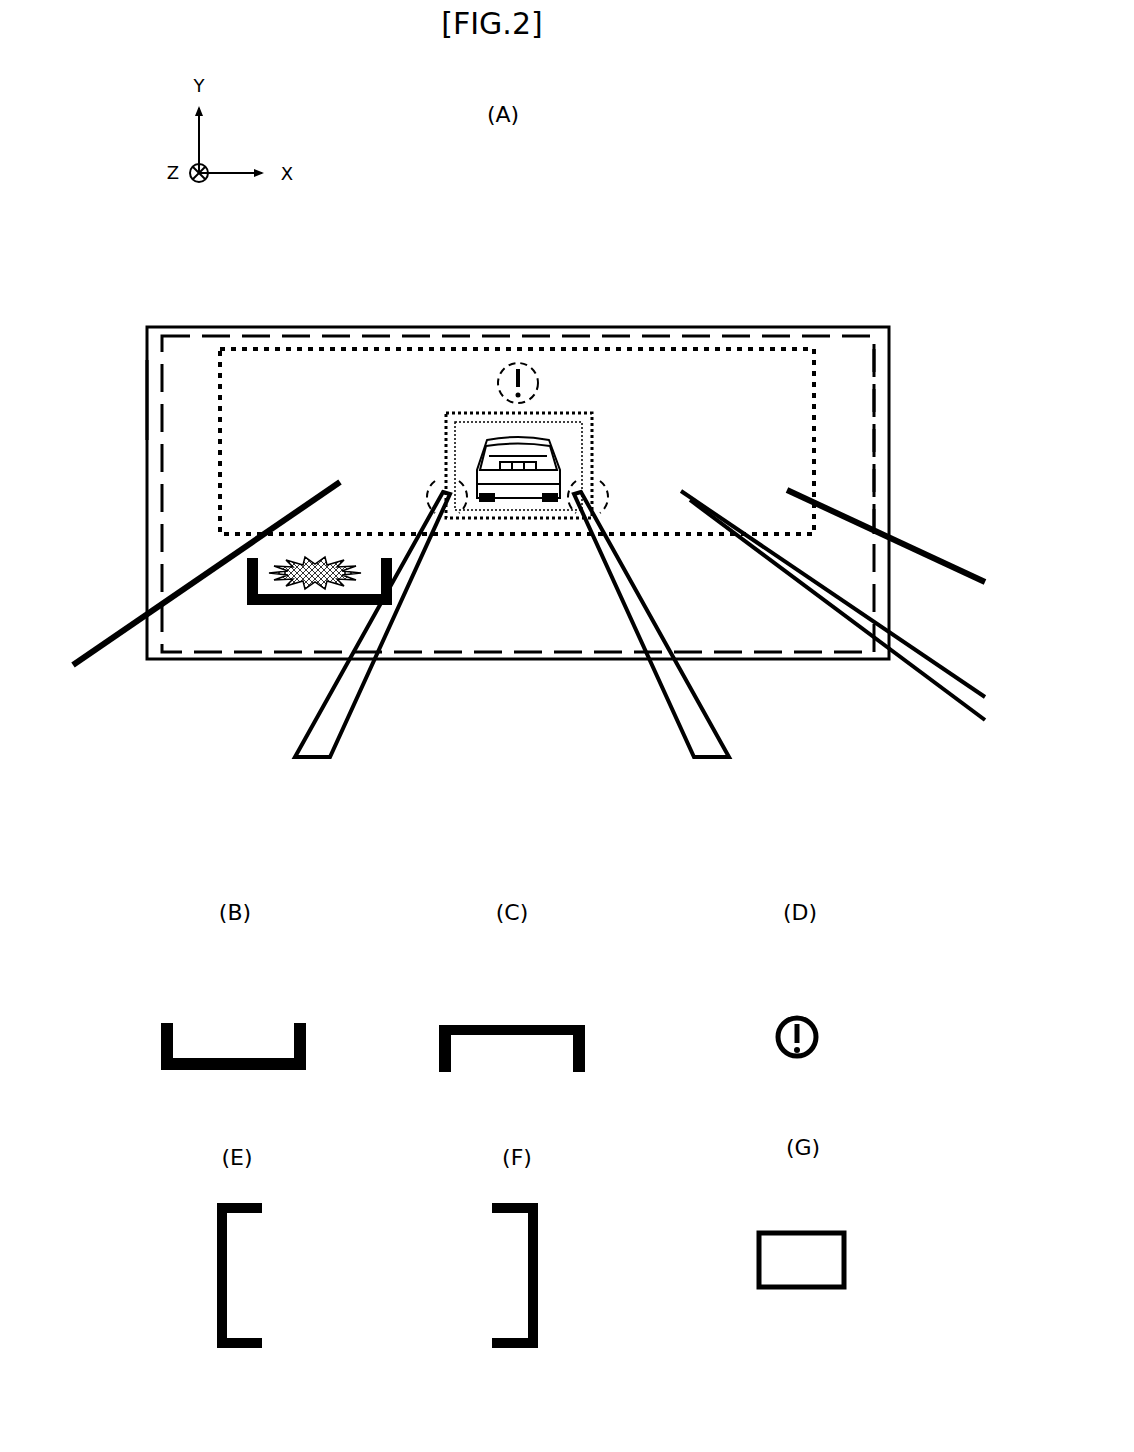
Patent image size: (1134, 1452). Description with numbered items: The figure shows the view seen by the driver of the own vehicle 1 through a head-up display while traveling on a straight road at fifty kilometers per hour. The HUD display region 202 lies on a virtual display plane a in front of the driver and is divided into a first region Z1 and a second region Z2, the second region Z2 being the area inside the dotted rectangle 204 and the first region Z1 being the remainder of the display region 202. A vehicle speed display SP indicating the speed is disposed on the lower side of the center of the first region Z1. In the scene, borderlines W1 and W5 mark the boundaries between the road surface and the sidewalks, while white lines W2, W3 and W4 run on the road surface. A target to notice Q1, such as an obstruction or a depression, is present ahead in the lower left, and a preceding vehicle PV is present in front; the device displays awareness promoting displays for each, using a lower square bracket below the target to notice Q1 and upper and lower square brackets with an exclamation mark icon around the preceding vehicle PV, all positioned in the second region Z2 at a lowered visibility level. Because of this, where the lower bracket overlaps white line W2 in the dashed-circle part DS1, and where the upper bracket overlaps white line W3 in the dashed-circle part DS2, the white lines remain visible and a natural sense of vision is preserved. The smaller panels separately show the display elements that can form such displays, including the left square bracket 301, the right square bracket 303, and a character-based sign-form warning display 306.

The vehicle 1 is at (760, 254).
The virtual display plane a is at (146, 402).
The HUD display region 202 is at (160, 364).
The dotted rectangle 204 is at (217, 400).
The left square bracket 301 is at (262, 1208).
The right square bracket 303 is at (538, 1215).
The sign-form awareness promoting display 306 is at (844, 1250).
The first region Z1 is at (853, 408).
The second region Z2 is at (793, 397).
The preceding vehicle PV is at (485, 458).
The overlap part DS1 is at (440, 478).
The overlap part DS2 is at (598, 492).
The borderline W1 is at (78, 666).
The white line W2 is at (305, 759).
The white line W3 is at (705, 759).
The white line W4 is at (925, 678).
The borderline W5 is at (910, 540).
The vehicle speed display SP is at (512, 648).
The target to notice Q1 is at (322, 566).